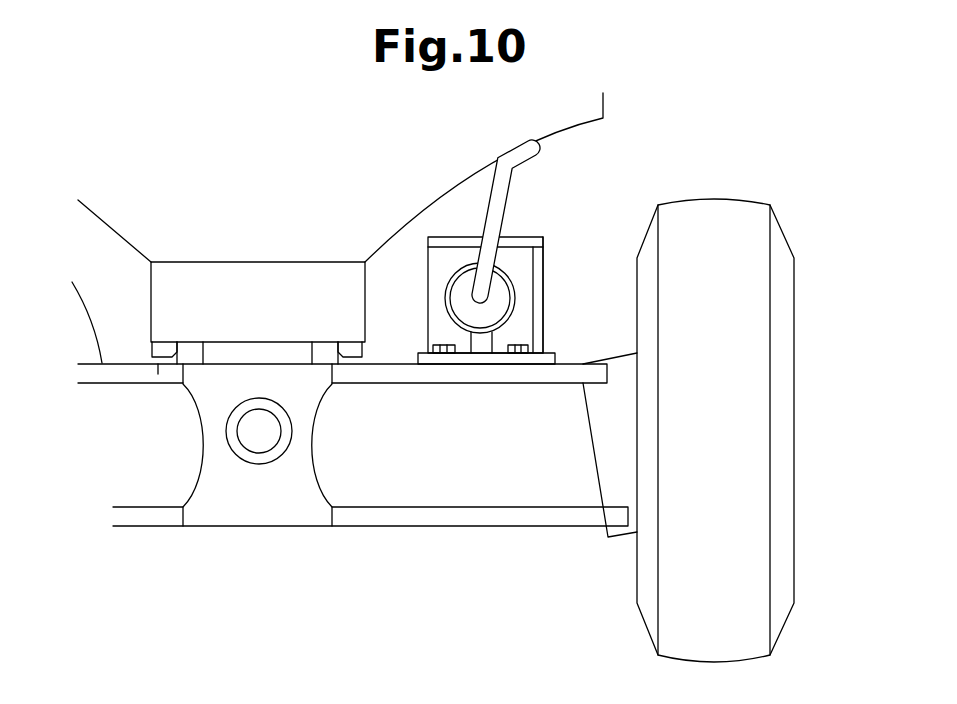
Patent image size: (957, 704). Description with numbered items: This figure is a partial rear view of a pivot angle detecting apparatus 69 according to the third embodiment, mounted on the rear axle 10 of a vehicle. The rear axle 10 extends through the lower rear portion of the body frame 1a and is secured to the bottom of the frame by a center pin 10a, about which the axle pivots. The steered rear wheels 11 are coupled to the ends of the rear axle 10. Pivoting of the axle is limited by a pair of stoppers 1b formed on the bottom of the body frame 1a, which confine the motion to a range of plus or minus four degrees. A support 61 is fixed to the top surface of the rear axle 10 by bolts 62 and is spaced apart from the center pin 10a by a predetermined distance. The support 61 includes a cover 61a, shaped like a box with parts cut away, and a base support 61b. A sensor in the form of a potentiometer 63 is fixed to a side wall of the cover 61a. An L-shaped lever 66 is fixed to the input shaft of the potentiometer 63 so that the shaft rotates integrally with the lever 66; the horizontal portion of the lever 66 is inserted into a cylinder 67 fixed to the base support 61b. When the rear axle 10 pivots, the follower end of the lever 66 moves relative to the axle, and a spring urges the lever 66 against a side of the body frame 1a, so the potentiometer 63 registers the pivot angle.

The body frame 1a is at (577, 127).
The stoppers 1b is at (164, 360).
The rear axle 10 is at (402, 527).
The center pin 10a is at (260, 438).
The rear wheels 11 is at (714, 197).
The support 61 is at (547, 320).
The cover 61a is at (547, 253).
The base support 61b is at (502, 353).
The bolts 62 is at (442, 348).
The potentiometer 63 is at (513, 274).
The L-shaped lever 66 is at (511, 186).
The cylinder 67 is at (455, 298).
The pivot angle detecting apparatus 69 is at (448, 218).